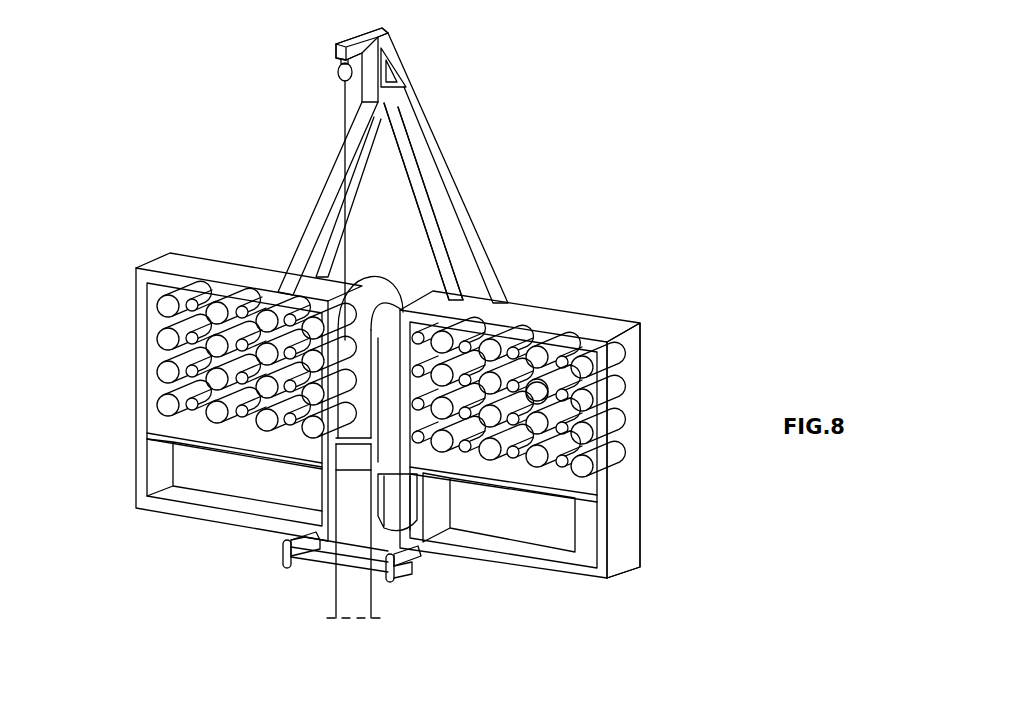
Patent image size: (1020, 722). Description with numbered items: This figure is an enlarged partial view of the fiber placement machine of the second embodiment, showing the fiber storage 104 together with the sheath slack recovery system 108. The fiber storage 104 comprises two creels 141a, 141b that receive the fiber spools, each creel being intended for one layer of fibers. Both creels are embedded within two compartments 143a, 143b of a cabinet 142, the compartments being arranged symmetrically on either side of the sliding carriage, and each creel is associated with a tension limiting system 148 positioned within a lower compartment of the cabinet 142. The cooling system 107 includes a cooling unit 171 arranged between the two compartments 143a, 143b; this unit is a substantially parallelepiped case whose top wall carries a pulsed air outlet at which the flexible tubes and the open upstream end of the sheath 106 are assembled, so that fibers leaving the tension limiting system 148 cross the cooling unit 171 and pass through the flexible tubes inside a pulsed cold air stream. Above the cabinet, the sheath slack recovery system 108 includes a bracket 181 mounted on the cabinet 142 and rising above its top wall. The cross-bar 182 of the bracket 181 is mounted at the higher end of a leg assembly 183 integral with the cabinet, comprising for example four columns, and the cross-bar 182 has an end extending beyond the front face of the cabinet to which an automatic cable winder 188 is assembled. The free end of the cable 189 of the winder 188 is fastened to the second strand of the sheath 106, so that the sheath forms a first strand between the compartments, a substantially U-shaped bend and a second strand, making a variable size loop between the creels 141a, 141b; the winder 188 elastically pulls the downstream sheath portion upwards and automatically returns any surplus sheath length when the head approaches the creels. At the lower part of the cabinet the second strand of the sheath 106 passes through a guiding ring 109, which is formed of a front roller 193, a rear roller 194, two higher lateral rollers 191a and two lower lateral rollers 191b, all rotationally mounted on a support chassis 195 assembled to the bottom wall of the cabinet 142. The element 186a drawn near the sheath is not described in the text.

The fiber storage 104 is at (638, 352).
The sheath 106 is at (372, 279).
The cooling system 107 is at (380, 426).
The sheath slack recovery system 108 is at (439, 152).
The guiding ring 109 is at (285, 541).
The creel 141a is at (176, 318).
The creel 141b is at (530, 383).
The cabinet 142 is at (630, 402).
The compartment 143a is at (157, 344).
The compartment 143b is at (557, 494).
The tension limiting system 148 is at (395, 507).
The cooling unit 171 is at (535, 393).
The bracket 181 is at (407, 77).
The cross-bar 182 is at (350, 42).
The leg assembly 183 is at (422, 120).
The pipe joint 186a is at (338, 437).
The automatic cable winder 188 is at (337, 76).
The cable 189 is at (342, 110).
The higher lateral rollers 191a is at (408, 562).
The lower lateral rollers 191b is at (403, 580).
The front roller 193 is at (346, 565).
The rear roller 194 is at (312, 558).
The support chassis 195 is at (283, 562).